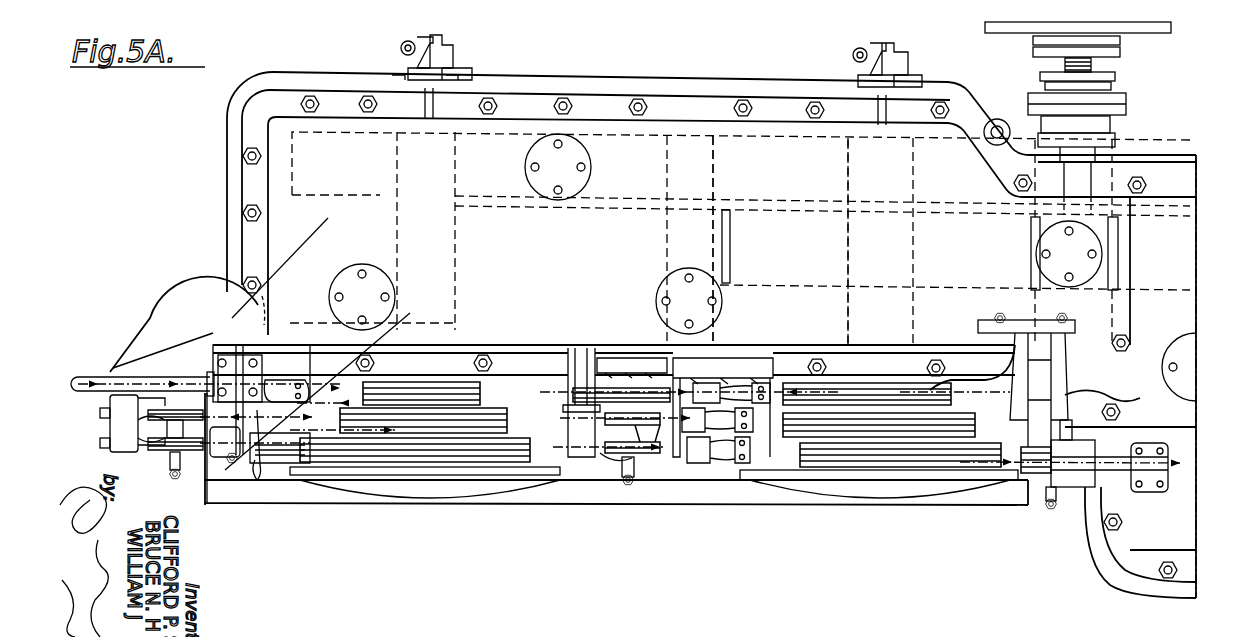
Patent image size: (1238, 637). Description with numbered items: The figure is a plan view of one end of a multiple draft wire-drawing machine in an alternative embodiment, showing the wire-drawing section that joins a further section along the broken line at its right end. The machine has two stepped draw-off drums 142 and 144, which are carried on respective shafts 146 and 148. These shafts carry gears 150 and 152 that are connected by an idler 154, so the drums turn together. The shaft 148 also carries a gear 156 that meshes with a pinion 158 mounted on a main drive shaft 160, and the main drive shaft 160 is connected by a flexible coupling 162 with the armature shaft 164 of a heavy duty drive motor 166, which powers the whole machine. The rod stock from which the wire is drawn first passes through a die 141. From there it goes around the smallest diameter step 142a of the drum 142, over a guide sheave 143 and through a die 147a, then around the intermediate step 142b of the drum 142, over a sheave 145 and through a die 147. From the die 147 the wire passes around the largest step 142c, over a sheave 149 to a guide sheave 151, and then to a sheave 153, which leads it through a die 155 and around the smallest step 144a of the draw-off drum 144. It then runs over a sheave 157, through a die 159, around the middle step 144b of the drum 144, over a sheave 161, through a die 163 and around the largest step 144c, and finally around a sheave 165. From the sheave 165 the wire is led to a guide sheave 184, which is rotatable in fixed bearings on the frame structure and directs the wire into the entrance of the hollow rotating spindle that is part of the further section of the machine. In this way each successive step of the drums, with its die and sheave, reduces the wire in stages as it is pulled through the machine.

The die 141 is at (313, 362).
The stepped draw-off drum 142 is at (457, 485).
The smallest diameter step 142a is at (462, 398).
The intermediate step 142b is at (492, 428).
The largest step 142c is at (395, 462).
The guide sheave 143 is at (135, 428).
The stepped draw-off drum 144 is at (918, 480).
The smallest step 144a is at (938, 398).
The middle step 144b is at (950, 436).
The largest step 144c is at (878, 462).
The sheave 145 is at (183, 462).
The shaft 146 is at (447, 278).
The die 147 is at (257, 410).
The die 147a is at (425, 330).
The shaft 148 is at (782, 323).
The sheave 149 is at (273, 467).
The gear 150 is at (286, 192).
The guide sheave 151 is at (580, 368).
The gear 152 is at (945, 194).
The sheave 153 is at (645, 368).
The idler 154 is at (628, 200).
The die 155 is at (782, 368).
The gear 156 is at (766, 287).
The sheave 157 is at (648, 430).
The pinion 158 is at (1033, 266).
The die 159 is at (762, 430).
The main drive shaft 160 is at (1093, 170).
The sheave 161 is at (617, 455).
The flexible coupling 162 is at (1118, 106).
The die 163 is at (745, 465).
The armature shaft 164 is at (1062, 65).
The sheave 165 is at (1125, 515).
The heavy duty drive motor 166 is at (1130, 33).
The guide sheave 184 is at (1052, 487).